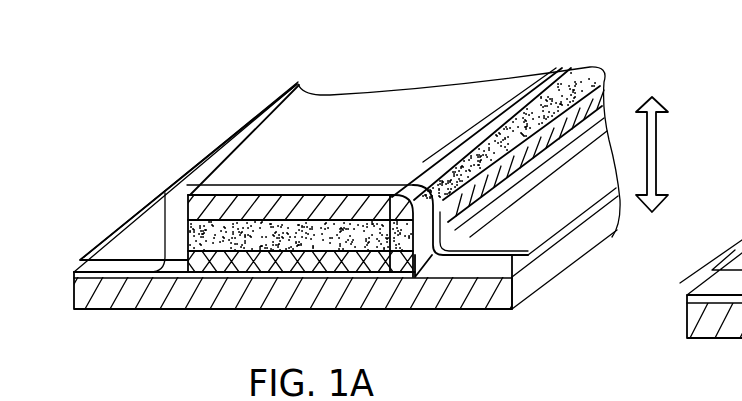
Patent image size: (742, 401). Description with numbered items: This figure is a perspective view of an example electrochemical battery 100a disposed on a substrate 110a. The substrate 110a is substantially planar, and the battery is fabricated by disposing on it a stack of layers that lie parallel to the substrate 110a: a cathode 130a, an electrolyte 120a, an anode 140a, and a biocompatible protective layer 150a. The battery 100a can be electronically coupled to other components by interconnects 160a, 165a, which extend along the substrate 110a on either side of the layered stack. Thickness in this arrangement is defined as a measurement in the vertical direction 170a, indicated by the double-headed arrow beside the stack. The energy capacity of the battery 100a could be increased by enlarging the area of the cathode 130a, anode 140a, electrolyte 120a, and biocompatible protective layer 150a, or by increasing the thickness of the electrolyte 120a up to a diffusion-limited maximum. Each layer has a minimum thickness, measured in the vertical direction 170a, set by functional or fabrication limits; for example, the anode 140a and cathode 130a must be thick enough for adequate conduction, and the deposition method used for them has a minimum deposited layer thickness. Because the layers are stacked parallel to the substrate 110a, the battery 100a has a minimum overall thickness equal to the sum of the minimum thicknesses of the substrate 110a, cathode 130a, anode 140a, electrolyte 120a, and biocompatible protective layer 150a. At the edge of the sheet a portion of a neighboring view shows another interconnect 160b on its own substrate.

The electrochemical battery 100a is at (313, 83).
The substrate 110a is at (410, 310).
The electrolyte 120a is at (265, 235).
The cathode 130a is at (228, 208).
The anode 140a is at (298, 258).
The biocompatible protective layer 150a is at (185, 178).
The interconnect 160a is at (118, 258).
The interconnect 165a is at (470, 265).
The vertical direction 170a is at (657, 143).
The first thin film layer (FIG. 1B) 160b is at (735, 305).